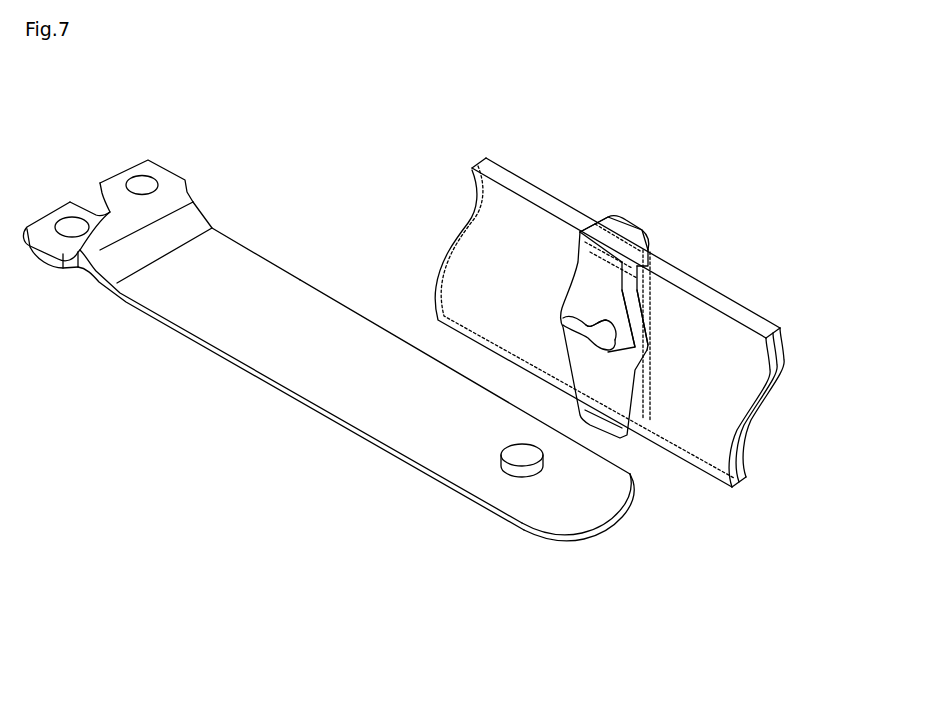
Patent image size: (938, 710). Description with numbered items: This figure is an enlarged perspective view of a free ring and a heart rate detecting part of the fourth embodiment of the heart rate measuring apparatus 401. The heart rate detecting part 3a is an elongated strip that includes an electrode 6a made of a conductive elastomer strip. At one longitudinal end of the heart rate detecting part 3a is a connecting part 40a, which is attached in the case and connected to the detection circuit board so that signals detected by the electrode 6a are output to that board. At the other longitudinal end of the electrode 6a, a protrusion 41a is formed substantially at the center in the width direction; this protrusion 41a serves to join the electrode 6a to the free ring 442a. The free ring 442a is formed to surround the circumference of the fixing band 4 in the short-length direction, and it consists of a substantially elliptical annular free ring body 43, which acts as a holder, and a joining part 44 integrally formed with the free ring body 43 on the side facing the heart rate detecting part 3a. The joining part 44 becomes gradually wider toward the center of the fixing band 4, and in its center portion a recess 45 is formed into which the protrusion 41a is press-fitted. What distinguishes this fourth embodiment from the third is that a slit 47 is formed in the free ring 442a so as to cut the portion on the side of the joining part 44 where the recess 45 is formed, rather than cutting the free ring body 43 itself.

The heart rate detecting part 3a is at (316, 408).
The connecting part 40a is at (172, 168).
The protrusion 41a is at (523, 474).
The electrode 6a is at (438, 460).
The fixing band 4 is at (738, 304).
The free ring body 43 is at (652, 290).
The heart rate measuring apparatus 401 is at (417, 162).
The free ring 442a is at (630, 229).
The joining part 44 is at (645, 352).
The recess 45 is at (567, 325).
The slit 47 is at (572, 322).